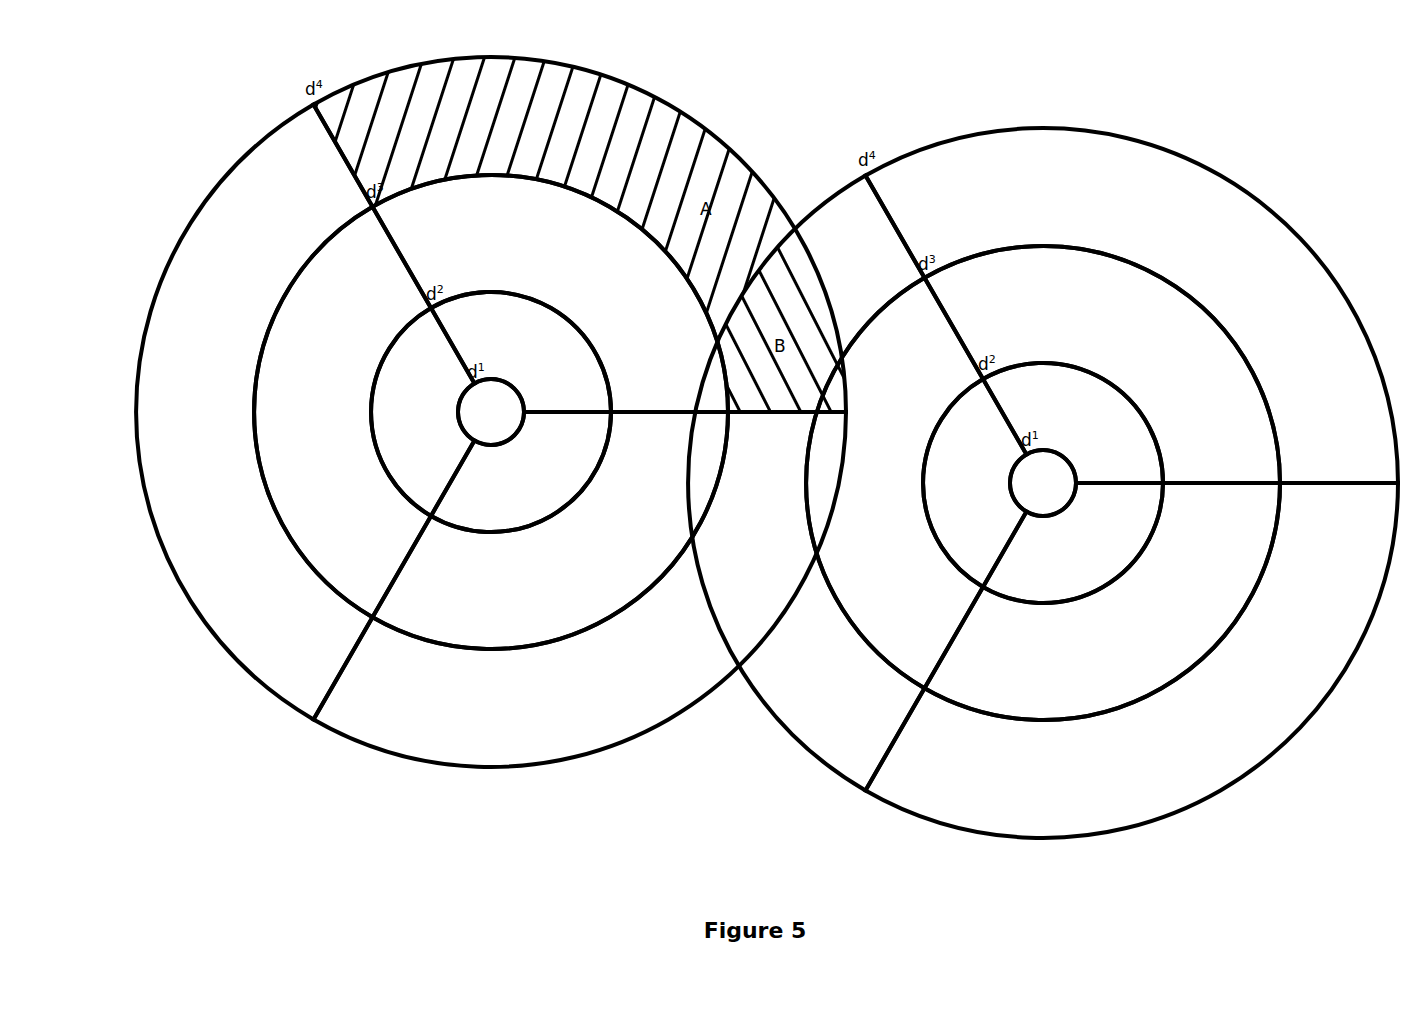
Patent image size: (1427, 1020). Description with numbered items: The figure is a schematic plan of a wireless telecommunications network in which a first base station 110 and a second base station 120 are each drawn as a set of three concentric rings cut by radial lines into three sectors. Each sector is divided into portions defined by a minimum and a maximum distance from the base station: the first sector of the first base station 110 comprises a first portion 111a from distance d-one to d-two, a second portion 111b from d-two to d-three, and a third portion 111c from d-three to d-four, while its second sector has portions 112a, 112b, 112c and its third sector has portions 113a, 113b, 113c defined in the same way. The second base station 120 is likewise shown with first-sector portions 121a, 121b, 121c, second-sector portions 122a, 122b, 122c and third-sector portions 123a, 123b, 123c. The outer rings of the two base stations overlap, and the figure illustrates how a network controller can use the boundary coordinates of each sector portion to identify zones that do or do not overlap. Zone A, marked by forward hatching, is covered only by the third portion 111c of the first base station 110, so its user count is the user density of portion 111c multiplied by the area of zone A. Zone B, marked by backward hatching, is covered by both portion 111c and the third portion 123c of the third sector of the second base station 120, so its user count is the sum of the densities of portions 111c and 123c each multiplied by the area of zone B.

The first base station 110 is at (491, 412).
The first portion of the first sector of the first base station 111a is at (521, 352).
The second portion of the first sector of the first base station 111b is at (551, 293).
The third portion of the first sector of the first base station 111c is at (580, 234).
The first portion of the second sector of the first base station 112a is at (521, 472).
The second portion of the second sector of the first base station 112b is at (551, 530).
The third portion of the second sector of the first base station 112c is at (580, 589).
The first portion of the third sector of the first base station 113a is at (422, 412).
The second portion of the third sector of the first base station 113b is at (342, 412).
The third portion of the third sector of the first base station 113c is at (254, 412).
The second base station 120 is at (1043, 483).
The first portion of the first sector of the second base station 121a is at (1073, 423).
The second portion of the first sector of the second base station 121b is at (1103, 364).
The third portion of the first sector of the second base station 121c is at (1132, 305).
The first portion of the second sector of the second base station 122a is at (1073, 543).
The second portion of the second sector of the second base station 122b is at (1103, 601).
The third portion of the second sector of the second base station 122c is at (1132, 660).
The first portion of the third sector of the second base station 123a is at (974, 483).
The second portion of the third sector of the second base station 123b is at (894, 483).
The third portion of the third sector of the second base station 123c is at (806, 483).